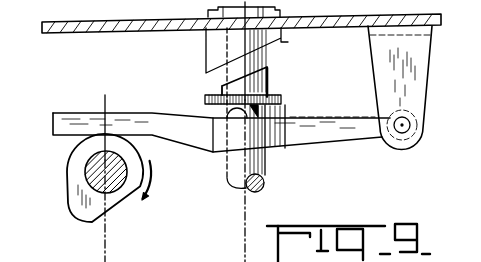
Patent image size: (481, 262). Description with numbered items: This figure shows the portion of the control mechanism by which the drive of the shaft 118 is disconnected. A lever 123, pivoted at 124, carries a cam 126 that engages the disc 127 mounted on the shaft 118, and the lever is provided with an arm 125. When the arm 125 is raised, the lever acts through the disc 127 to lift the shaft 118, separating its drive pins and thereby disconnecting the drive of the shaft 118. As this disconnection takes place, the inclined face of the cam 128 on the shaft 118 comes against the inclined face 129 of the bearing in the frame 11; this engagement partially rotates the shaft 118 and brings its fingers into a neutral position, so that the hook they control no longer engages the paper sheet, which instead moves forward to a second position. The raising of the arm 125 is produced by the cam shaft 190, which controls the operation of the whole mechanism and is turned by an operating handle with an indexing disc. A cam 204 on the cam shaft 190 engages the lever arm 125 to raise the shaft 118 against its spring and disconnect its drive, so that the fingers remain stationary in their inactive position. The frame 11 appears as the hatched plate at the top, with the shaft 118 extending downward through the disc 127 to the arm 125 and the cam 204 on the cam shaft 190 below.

The frame 11 is at (63, 33).
The shaft 118 is at (259, 171).
The lever 123 is at (359, 130).
The pivot 124 is at (397, 118).
The arm 125 is at (123, 118).
The cam 126 is at (252, 114).
The disc 127 is at (283, 100).
The cam 128 is at (266, 80).
The inclined face 129 is at (279, 42).
The cam shaft 190 is at (92, 174).
The cam 204 is at (72, 185).